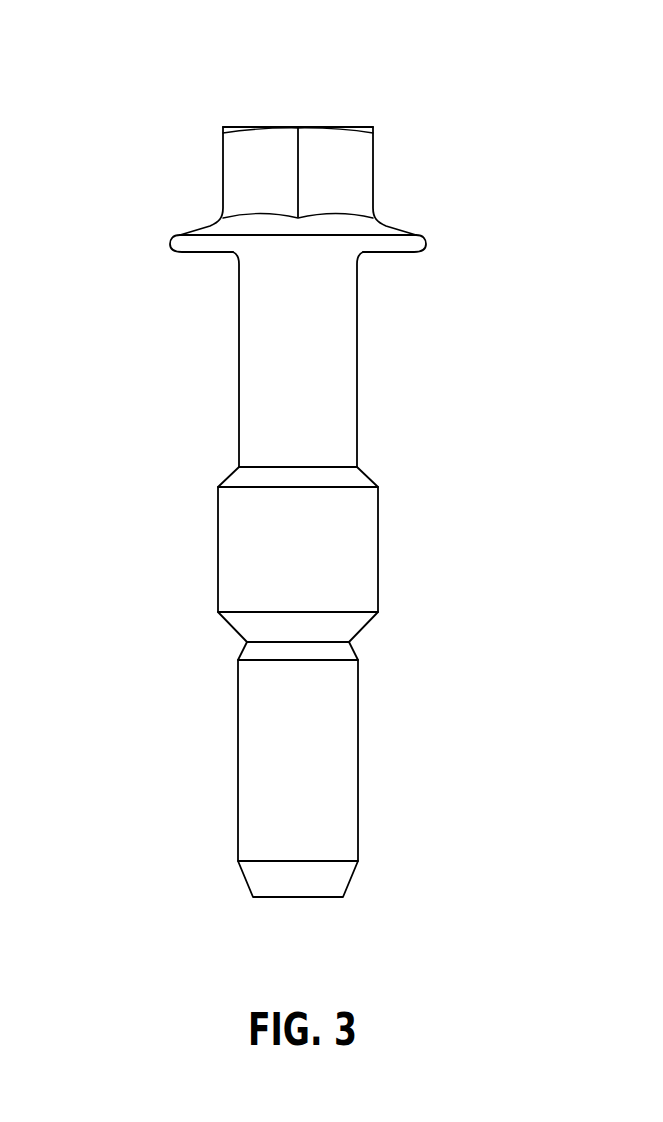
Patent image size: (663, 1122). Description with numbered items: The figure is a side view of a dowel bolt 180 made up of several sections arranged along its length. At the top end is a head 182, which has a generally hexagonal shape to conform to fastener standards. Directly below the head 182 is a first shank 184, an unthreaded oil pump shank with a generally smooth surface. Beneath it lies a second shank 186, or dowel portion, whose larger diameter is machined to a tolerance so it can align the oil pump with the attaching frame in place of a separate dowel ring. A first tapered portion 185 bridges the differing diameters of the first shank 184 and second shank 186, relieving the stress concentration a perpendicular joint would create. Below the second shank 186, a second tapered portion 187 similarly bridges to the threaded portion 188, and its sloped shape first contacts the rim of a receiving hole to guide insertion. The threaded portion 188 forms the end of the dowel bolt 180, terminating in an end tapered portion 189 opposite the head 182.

The dowel bolt 180 is at (126, 46).
The head 182 is at (392, 168).
The first shank 184 is at (315, 366).
The first tapered portion 185 is at (209, 475).
The second shank 186 is at (315, 557).
The second tapered portion 187 is at (386, 642).
The threaded portion 188 is at (317, 774).
The end tapered portion 189 is at (223, 873).